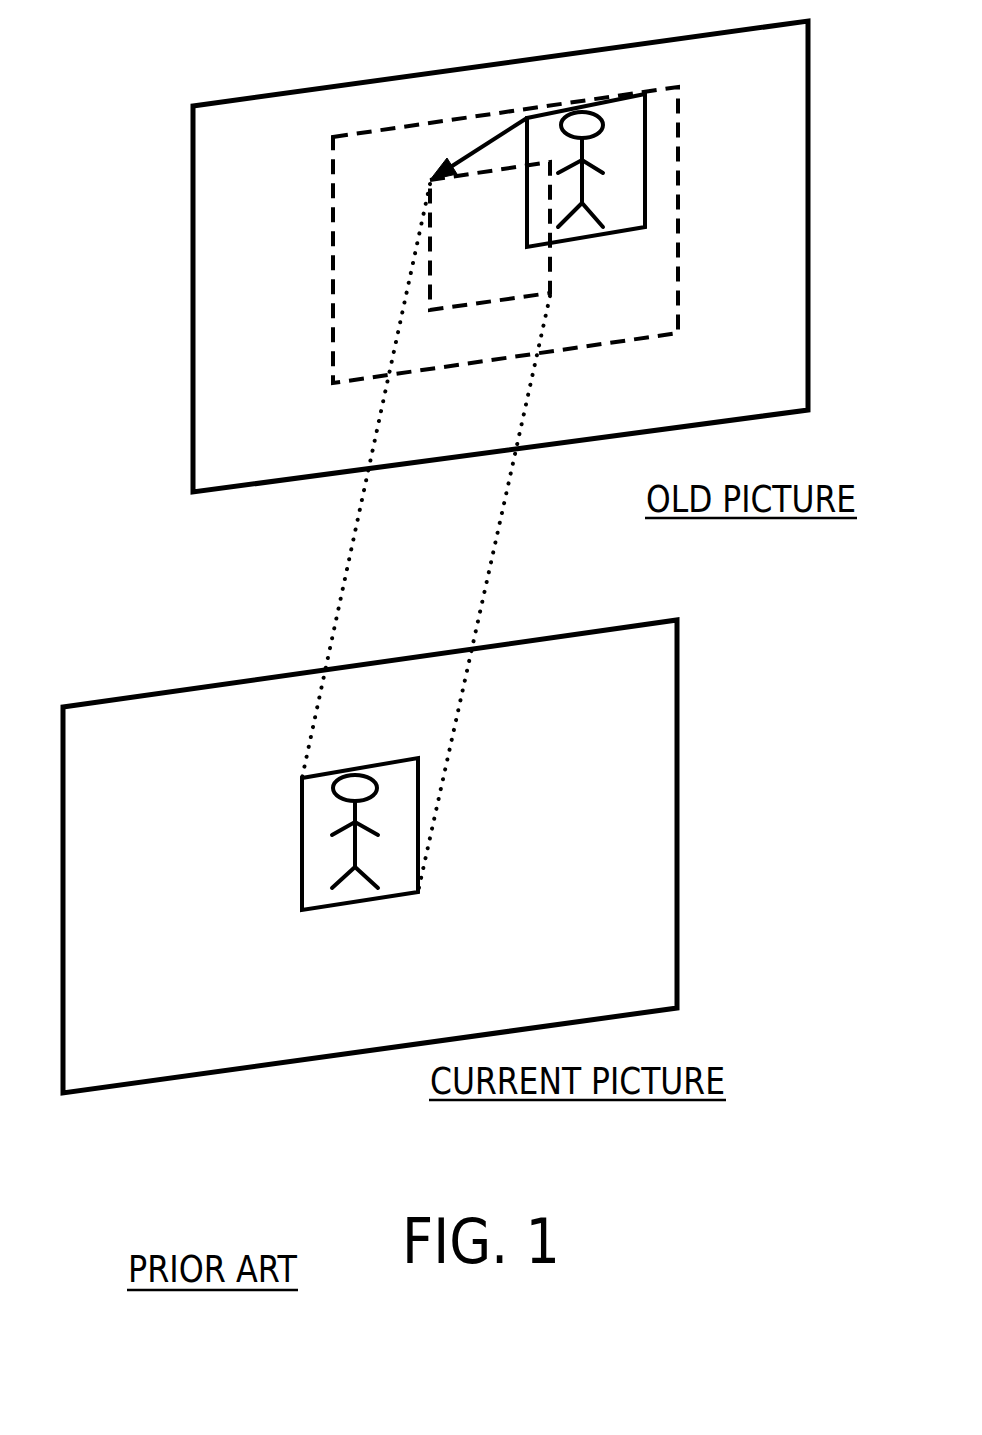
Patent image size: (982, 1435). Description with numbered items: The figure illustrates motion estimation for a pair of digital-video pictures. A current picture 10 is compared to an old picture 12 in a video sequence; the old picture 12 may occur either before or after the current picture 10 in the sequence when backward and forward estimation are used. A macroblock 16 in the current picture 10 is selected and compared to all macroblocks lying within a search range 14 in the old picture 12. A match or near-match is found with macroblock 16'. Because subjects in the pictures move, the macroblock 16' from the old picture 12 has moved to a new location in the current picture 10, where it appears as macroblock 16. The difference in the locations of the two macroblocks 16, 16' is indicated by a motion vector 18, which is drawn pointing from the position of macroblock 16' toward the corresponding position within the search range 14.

The current picture 10 is at (153, 1028).
The old picture 12 is at (273, 428).
The search range 14 is at (332, 182).
The macroblock 16 is at (360, 868).
The macroblock 16' is at (586, 204).
The motion vector 18 is at (489, 138).